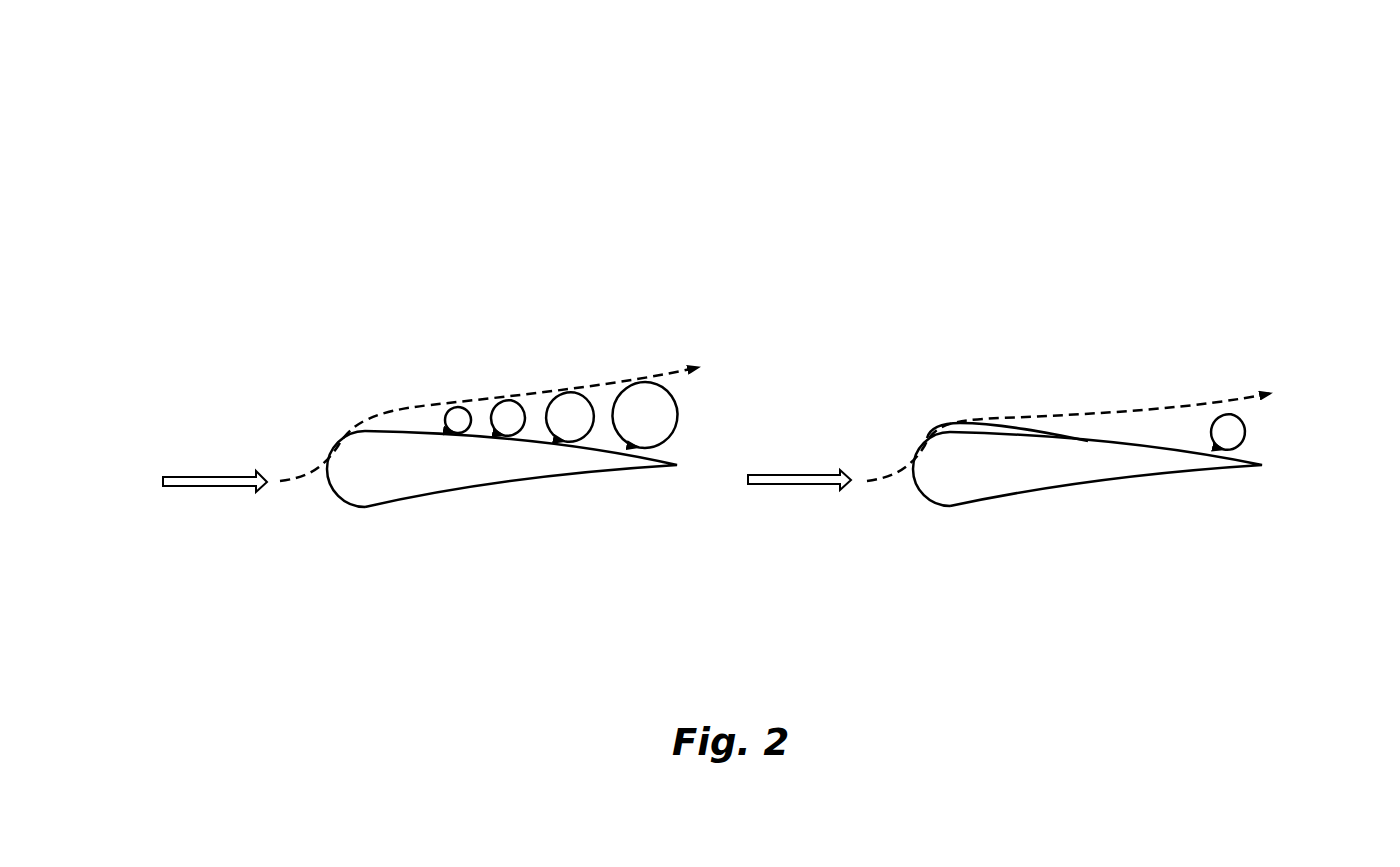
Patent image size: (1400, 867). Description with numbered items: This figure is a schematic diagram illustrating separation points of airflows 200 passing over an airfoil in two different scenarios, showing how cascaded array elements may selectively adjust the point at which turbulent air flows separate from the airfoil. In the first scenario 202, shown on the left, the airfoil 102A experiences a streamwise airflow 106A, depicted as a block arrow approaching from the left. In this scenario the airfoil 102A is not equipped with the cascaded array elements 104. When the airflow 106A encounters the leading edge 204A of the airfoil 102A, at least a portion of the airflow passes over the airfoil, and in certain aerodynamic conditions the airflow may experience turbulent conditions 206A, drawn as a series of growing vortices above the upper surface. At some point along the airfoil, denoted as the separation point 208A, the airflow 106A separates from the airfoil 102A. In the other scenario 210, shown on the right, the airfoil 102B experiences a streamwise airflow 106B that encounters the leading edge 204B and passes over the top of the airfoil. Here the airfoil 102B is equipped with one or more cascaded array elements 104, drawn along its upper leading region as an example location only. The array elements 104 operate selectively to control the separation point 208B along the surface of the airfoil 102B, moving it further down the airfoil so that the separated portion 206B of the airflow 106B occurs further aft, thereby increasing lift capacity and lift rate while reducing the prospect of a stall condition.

The separation points of airflows 200 is at (815, 78).
The first scenario 202 is at (590, 312).
The another scenario 210 is at (1134, 285).
The airfoil 102A is at (380, 480).
The airfoil 102B is at (1017, 470).
The cascaded array elements 104 is at (967, 425).
The streamwise airflow 106A is at (210, 495).
The streamwise airflow 106B is at (770, 495).
The leading edge 204A is at (350, 503).
The leading edge 204B is at (925, 512).
The turbulent conditions 206A is at (690, 403).
The separated portion of the airflow 206B is at (1260, 445).
The separation point 208A is at (377, 412).
The separation point 208B is at (1068, 403).